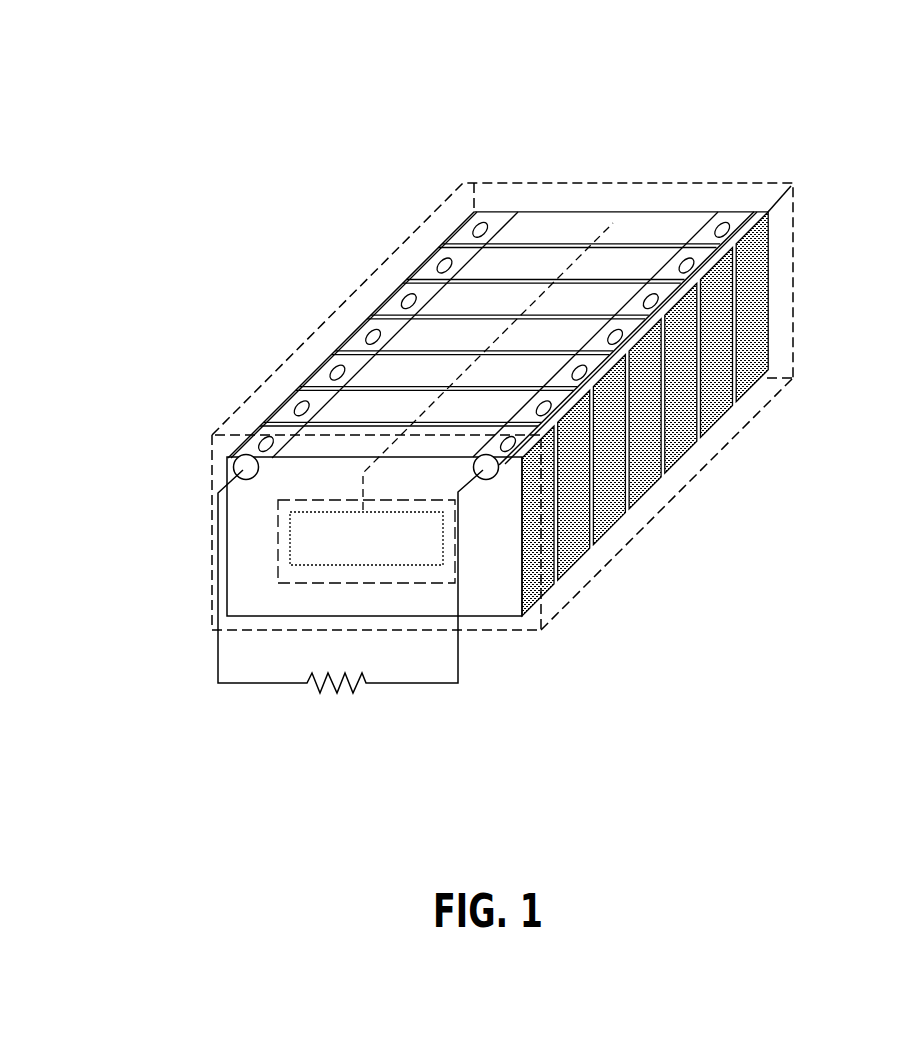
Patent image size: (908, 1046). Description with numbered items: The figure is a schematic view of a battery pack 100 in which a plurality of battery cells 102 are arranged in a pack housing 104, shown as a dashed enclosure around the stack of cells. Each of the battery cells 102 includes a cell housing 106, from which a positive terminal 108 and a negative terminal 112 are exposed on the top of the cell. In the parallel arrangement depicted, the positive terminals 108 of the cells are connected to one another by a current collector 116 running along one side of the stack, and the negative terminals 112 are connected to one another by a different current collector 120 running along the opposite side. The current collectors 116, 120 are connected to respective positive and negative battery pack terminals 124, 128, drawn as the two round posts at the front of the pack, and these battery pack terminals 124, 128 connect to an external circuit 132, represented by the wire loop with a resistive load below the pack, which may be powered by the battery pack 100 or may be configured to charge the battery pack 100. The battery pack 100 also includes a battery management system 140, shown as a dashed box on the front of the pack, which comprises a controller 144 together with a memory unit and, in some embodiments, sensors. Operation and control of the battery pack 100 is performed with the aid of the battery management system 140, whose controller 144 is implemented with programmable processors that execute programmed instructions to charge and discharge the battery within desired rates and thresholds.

The battery pack 100 is at (495, 428).
The battery cells 102 is at (533, 414).
The pack housing 104 is at (680, 495).
The cell housing 106 is at (683, 430).
The positive terminal 108 is at (402, 302).
The negative terminal 112 is at (662, 297).
The current collector 116 is at (458, 226).
The current collector 120 is at (682, 338).
The positive battery pack terminal 124 is at (244, 467).
The negative battery pack terminal 128 is at (498, 468).
The external circuit 132 is at (323, 712).
The battery management system 140 is at (355, 449).
The controller 144 is at (287, 535).